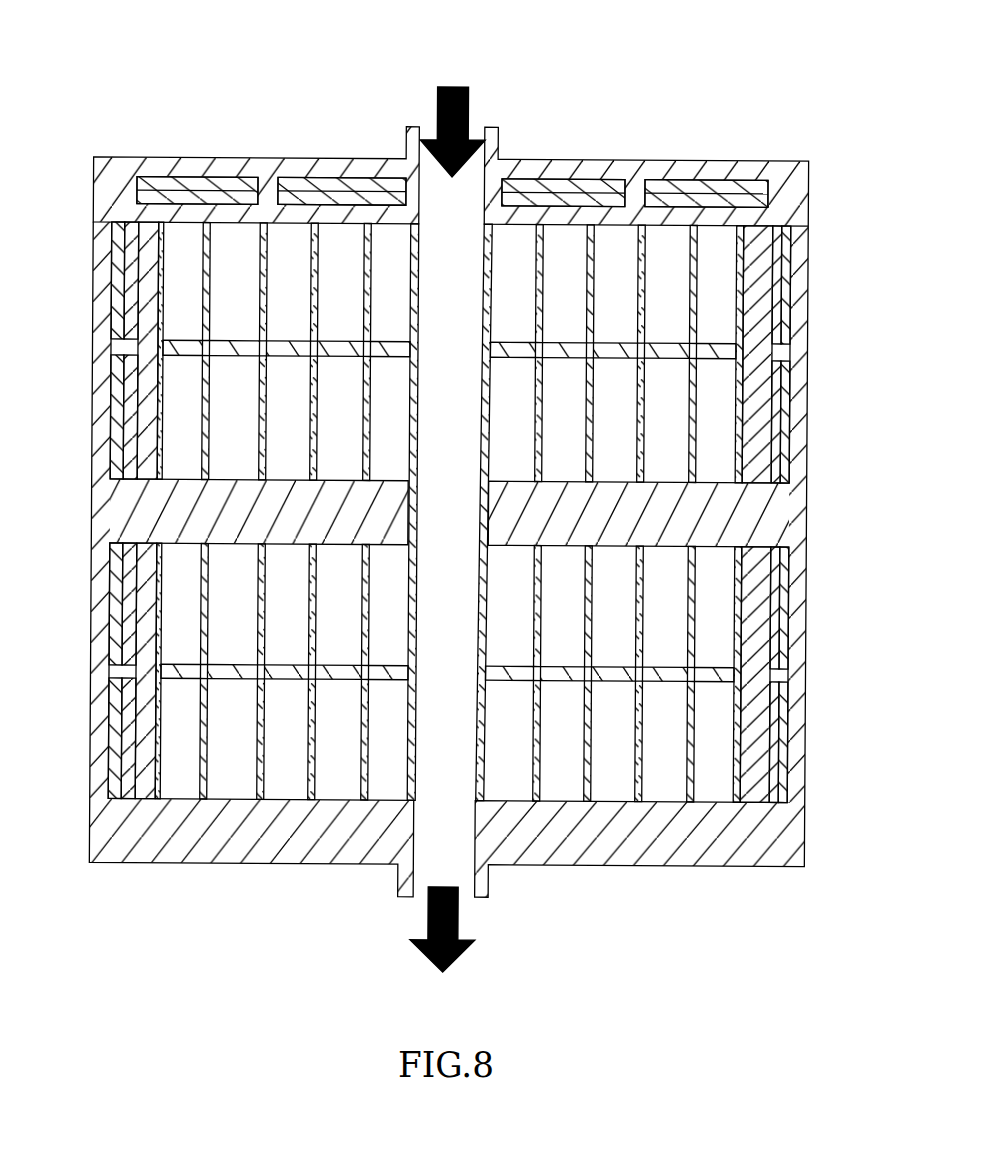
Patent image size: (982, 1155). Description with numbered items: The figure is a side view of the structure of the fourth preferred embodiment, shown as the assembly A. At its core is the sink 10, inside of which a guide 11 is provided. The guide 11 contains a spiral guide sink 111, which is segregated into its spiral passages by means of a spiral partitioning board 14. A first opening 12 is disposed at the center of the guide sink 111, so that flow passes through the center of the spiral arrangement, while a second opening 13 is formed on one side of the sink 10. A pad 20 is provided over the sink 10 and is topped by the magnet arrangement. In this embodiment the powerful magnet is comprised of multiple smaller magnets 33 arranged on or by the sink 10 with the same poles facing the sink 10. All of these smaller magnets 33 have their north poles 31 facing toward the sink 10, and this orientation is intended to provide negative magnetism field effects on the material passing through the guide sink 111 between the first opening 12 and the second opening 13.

The heat exchanger assembly A is at (452, 496).
The sink 10 is at (161, 250).
The guide 11 is at (216, 357).
The guide sink 111 is at (501, 242).
The first opening 12 is at (483, 137).
The second opening 13 is at (170, 313).
The spiral partitioning board 14 is at (644, 240).
The pad 20 is at (806, 162).
The north pole 31 is at (135, 188).
The smaller magnets 33 is at (208, 186).